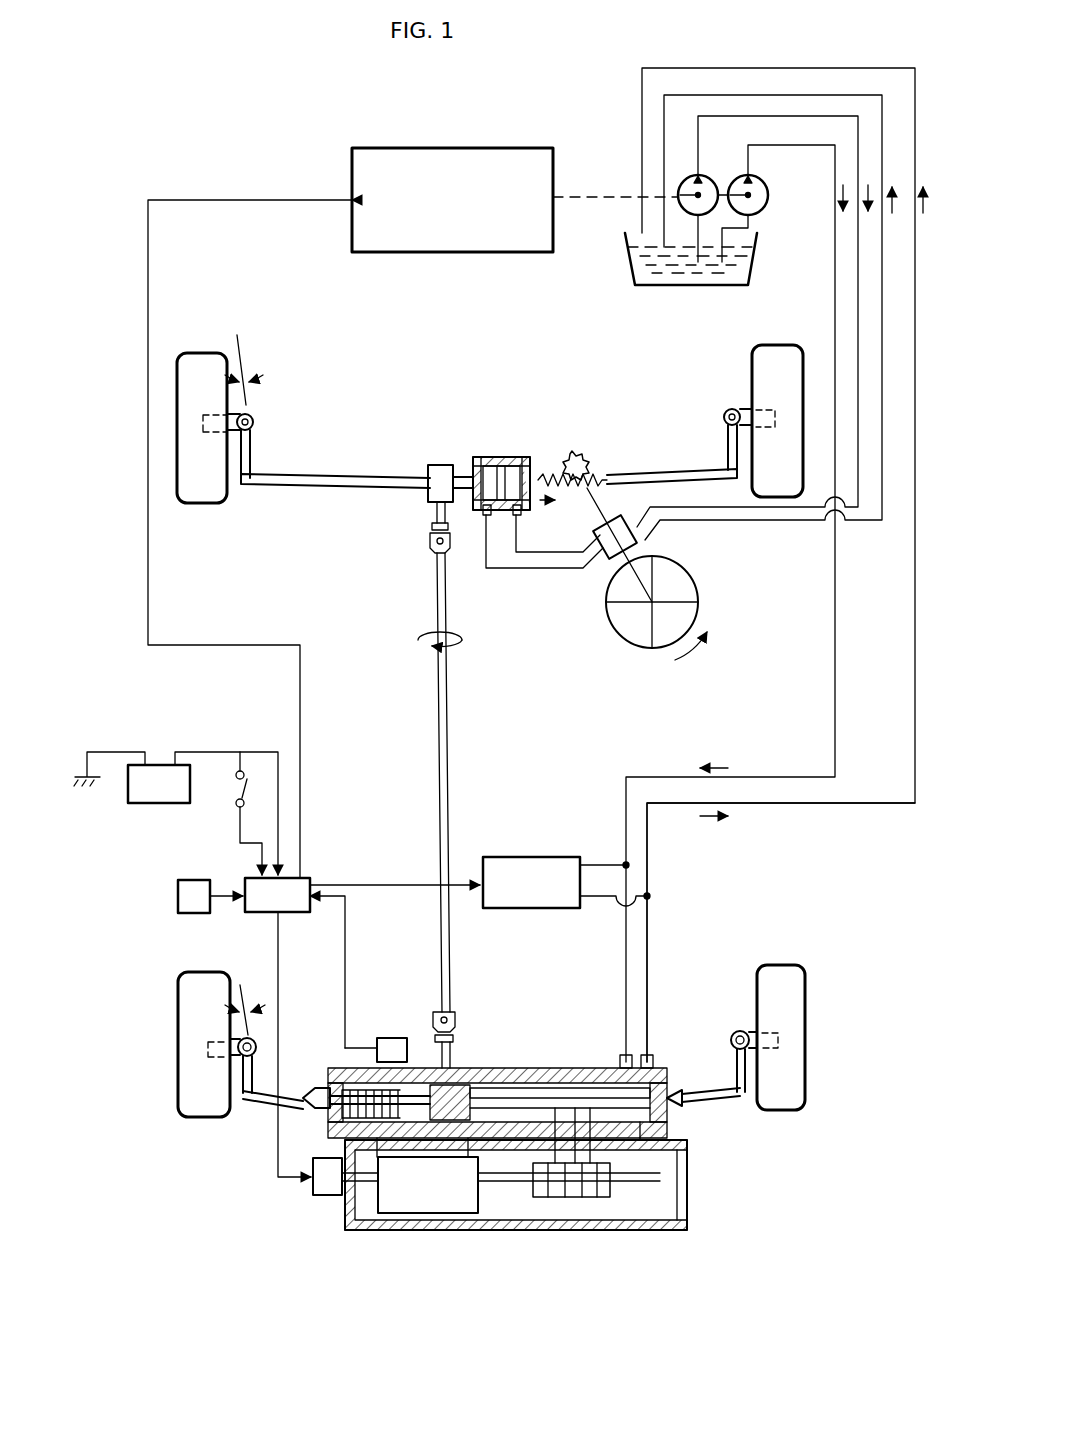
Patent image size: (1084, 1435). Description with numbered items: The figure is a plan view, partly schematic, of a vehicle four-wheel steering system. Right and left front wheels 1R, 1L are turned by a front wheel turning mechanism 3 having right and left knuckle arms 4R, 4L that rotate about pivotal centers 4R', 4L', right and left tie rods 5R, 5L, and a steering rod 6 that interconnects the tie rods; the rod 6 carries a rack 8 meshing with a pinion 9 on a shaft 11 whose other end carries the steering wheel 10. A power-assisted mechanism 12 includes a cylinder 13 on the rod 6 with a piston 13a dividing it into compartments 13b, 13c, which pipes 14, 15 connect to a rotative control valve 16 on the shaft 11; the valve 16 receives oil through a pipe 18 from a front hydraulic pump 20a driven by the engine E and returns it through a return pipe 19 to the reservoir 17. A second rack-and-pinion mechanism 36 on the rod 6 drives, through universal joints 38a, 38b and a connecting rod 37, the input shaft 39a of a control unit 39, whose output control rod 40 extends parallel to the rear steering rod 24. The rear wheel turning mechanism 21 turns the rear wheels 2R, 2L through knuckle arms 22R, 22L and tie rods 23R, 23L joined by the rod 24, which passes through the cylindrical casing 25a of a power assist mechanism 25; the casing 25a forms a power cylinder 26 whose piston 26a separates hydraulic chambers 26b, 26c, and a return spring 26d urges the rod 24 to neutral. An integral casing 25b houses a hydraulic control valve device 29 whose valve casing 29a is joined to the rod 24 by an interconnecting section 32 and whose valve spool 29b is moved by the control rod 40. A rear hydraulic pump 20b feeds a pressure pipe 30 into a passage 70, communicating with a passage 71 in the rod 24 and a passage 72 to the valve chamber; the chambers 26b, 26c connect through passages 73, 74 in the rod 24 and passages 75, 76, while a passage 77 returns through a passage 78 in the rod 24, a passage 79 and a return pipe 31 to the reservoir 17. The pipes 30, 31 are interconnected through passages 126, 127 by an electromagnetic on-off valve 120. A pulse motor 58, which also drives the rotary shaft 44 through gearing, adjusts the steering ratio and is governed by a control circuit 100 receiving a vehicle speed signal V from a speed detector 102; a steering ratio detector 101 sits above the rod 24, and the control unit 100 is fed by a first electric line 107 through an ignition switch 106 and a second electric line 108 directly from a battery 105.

The engine E is at (452, 255).
The front hydraulic pump 20a is at (678, 190).
The rear hydraulic pump 20b is at (771, 212).
The hydraulic oil reservoir 17 is at (630, 273).
The pipe 18 is at (858, 260).
The return pipe 19 is at (885, 382).
The left front wheel 1L is at (200, 515).
The right front wheel 1R is at (777, 399).
The left knuckle arm 4L is at (273, 454).
The pivotal center 4L' is at (255, 413).
The right knuckle arm 4R is at (706, 447).
The pivotal center 4R' is at (733, 396).
The left tie rod 5L is at (287, 490).
The right tie rod 5R is at (719, 486).
The steering rod 6 is at (363, 472).
The second rack-and-pinion mechanism 36 is at (425, 498).
The connecting rod 37 is at (436, 715).
The universal joint 38a is at (430, 548).
The universal joint 38b is at (443, 1008).
The cylinder 13 is at (502, 450).
The piston 13a is at (500, 455).
The compartment 13b is at (485, 458).
The compartment 13c is at (514, 455).
The front wheel turning mechanism 3 is at (535, 445).
The pinion 9 is at (575, 447).
The rack 8 is at (594, 476).
The shaft 11 is at (628, 540).
The control valve 16 is at (605, 560).
The pipe 15 is at (552, 552).
The pipe 14 is at (502, 575).
The power-assisted mechanism 12 is at (550, 572).
The steering wheel 10 is at (626, 638).
The pressure pipe 30 is at (622, 795).
The return pipe 31 is at (647, 845).
The battery 105 is at (153, 805).
The ignition switch 106 is at (234, 790).
The first electric line 107 is at (237, 763).
The second electric line 108 is at (278, 783).
The control circuit 100 is at (300, 915).
The speed detector 102 is at (177, 894).
The vehicle speed signal V is at (225, 882).
The steering ratio detector 101 is at (387, 1038).
The electromagnetic on-off valve 120 is at (522, 857).
The passage 126 is at (593, 861).
The passage 127 is at (593, 900).
The left rear wheel 2L is at (177, 1060).
The right rear wheel 2R is at (805, 1040).
The left knuckle arm 22L is at (248, 1095).
The right knuckle arm 22R is at (748, 1077).
The left tie rod 23L is at (265, 1112).
The right tie rod 23R is at (718, 1104).
The power cylinder 26 is at (482, 1055).
The piston 26a is at (462, 1066).
The hydraulic chamber 26b is at (433, 1083).
The hydraulic chamber 26c is at (512, 1065).
The return spring 26d is at (335, 1065).
The steering rod 24 is at (318, 1090).
The power assist mechanism 25 is at (515, 1062).
The cylindrical casing 25a is at (560, 1060).
The casing 25b is at (688, 1195).
The passage 73 is at (552, 1100).
The passage 74 is at (574, 1100).
The passage 71 is at (592, 1100).
The passage 70 is at (640, 1056).
The passage 79 is at (655, 1068).
The passage 78 is at (668, 1090).
The interconnecting section 32 is at (655, 1130).
The passage 77 is at (660, 1150).
The rear wheel turning mechanism 21 is at (693, 1182).
The control unit 39 is at (398, 1232).
The input shaft 39a is at (445, 1178).
The rotary shaft 44 is at (427, 1175).
The pulse motor 58 is at (322, 1198).
The control rod 40 is at (495, 1215).
The passage 72 is at (585, 1200).
The passage 76 is at (556, 1200).
The passage 75 is at (600, 1200).
The hydraulic control valve device 29 is at (565, 1205).
The valve casing 29a is at (545, 1204).
The valve spool 29b is at (585, 1204).